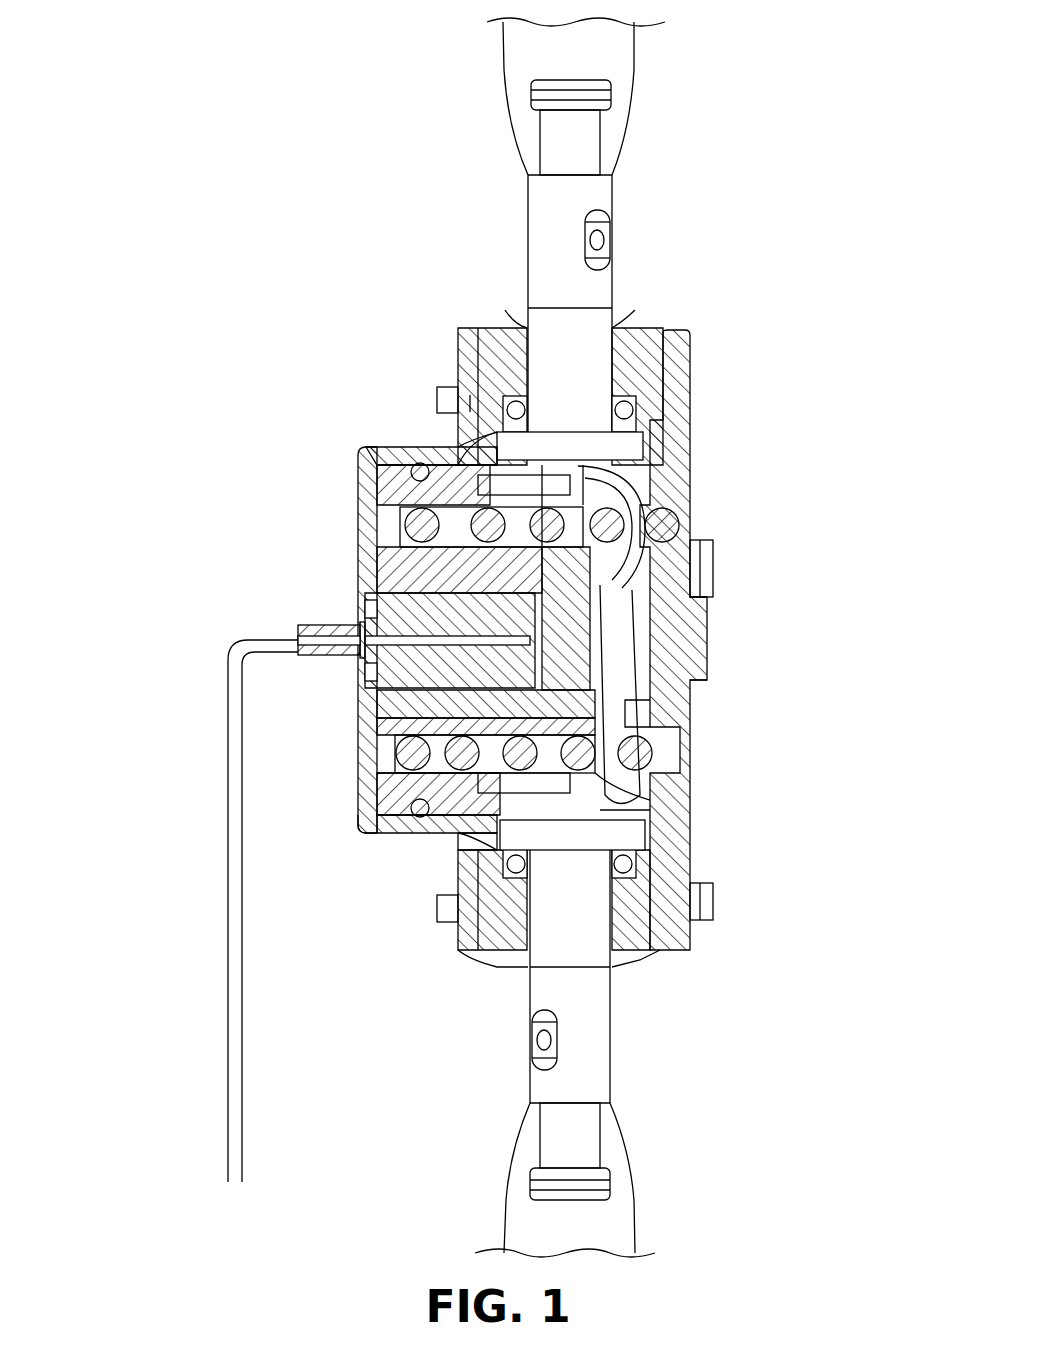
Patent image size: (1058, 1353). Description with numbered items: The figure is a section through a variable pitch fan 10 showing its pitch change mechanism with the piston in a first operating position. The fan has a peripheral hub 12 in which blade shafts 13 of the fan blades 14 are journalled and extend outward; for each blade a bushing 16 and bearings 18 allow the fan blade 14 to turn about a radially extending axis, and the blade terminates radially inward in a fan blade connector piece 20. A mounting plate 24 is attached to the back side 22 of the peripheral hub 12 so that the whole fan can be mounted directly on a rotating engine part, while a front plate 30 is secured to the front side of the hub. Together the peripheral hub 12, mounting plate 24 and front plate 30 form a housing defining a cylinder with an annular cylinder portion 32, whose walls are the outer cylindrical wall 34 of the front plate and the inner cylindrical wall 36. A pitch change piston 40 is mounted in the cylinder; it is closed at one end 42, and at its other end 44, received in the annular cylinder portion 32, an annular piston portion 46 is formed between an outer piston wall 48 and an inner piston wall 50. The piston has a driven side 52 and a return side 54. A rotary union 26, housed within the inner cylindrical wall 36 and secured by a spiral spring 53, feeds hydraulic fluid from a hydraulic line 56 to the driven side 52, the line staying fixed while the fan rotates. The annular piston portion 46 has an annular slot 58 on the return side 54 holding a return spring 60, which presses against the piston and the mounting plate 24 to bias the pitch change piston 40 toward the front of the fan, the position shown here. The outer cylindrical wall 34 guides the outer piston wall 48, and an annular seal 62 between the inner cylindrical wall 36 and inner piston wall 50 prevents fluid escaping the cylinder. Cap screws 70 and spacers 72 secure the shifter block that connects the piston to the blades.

The variable pitch fan 10 is at (400, 150).
The peripheral hub 12 is at (632, 315).
The blade shaft 13 is at (527, 238).
The fan blade 14 is at (623, 92).
The bushing 16 is at (517, 338).
The bearings 18 is at (650, 407).
The fan blade connector piece 20 is at (628, 443).
The back side 22 is at (675, 330).
The mounting plate 24 is at (677, 453).
The rotary union 26 is at (298, 628).
The front plate 30 is at (450, 475).
The annular cylinder portion 32 is at (357, 470).
The outer cylindrical wall 34 is at (430, 452).
The inner cylindrical wall 36 is at (465, 600).
The pitch change piston 40 is at (603, 580).
The closed end 42 is at (677, 652).
The other end 44 is at (405, 792).
The annular piston portion 46 is at (363, 823).
The outer piston wall 48 is at (432, 817).
The inner piston wall 50 is at (520, 612).
The driven side 52 is at (615, 625).
The spiral spring 53 is at (362, 622).
The return side 54 is at (655, 718).
The hydraulic line 56 is at (228, 832).
The annular slot 58 is at (448, 517).
The return spring 60 is at (623, 523).
The annular seal 62 is at (407, 715).
The cap screws 70 is at (648, 812).
The spacers 72 is at (690, 887).